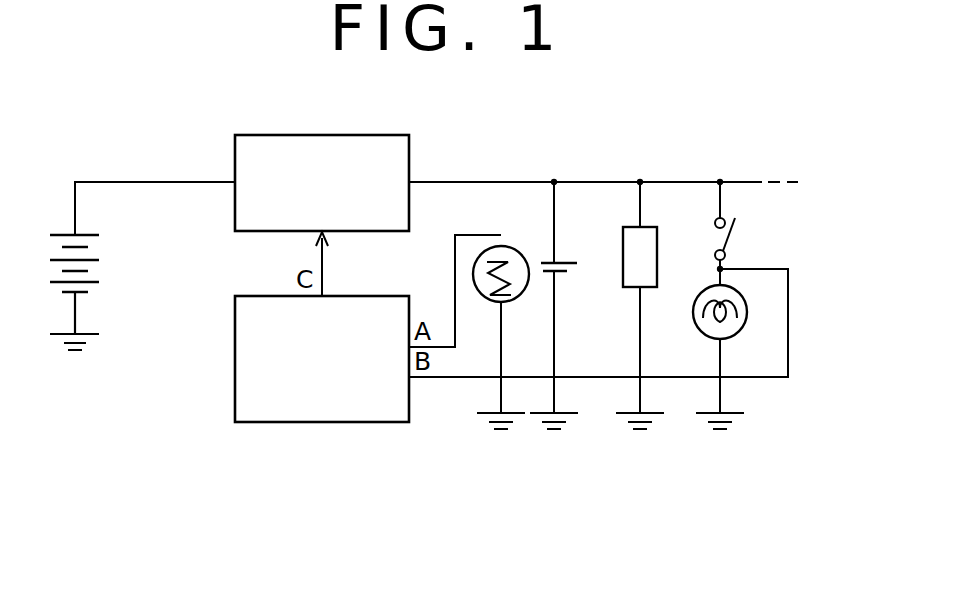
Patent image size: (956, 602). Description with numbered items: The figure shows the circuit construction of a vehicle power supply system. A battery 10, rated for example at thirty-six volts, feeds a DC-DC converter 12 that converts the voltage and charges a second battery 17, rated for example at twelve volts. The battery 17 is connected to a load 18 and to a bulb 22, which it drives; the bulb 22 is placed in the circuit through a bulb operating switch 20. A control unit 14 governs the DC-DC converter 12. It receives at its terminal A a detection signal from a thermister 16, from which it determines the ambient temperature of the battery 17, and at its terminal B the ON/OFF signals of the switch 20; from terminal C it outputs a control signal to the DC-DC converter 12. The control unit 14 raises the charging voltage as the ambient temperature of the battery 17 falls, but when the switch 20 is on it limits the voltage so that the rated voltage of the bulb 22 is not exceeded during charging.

The battery 10 is at (100, 269).
The DC-DC converter 12 is at (396, 135).
The control unit 14 is at (318, 422).
The thermister 16 is at (517, 251).
The battery 17 is at (567, 262).
The load 18 is at (623, 288).
The bulb operating switch 20 is at (733, 228).
The bulb 22 is at (692, 313).